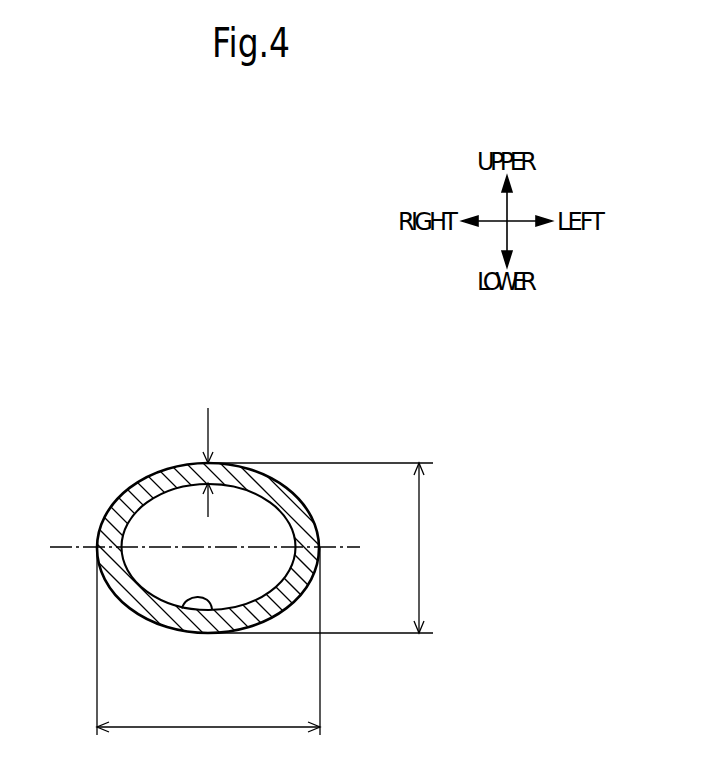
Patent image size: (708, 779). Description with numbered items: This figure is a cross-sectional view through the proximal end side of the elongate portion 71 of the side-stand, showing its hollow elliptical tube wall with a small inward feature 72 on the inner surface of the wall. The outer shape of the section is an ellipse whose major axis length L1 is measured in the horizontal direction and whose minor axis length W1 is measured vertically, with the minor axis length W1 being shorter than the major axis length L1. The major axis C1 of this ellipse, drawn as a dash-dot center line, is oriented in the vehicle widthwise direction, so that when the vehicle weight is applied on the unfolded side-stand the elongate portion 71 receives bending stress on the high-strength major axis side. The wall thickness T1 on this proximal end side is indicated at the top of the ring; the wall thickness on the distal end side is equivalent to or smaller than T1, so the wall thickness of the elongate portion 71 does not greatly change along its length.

The elongate portion 71 is at (125, 446).
The protrusion 72 is at (190, 603).
The major axis C1 is at (343, 547).
The wall thickness T1 is at (206, 447).
The minor axis length W1 is at (327, 548).
The major axis length L1 is at (208, 641).